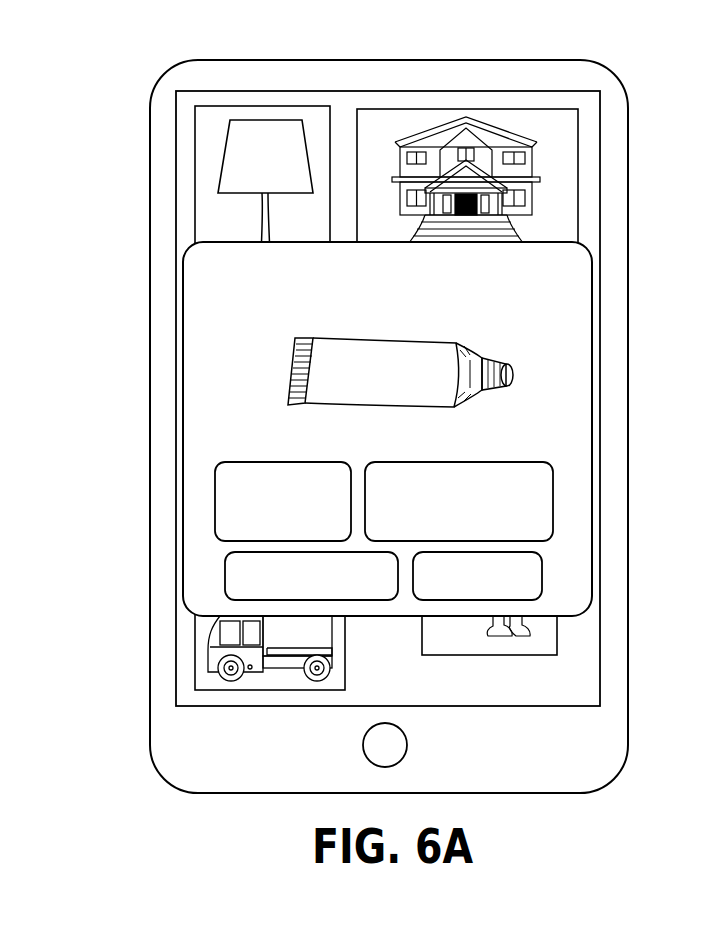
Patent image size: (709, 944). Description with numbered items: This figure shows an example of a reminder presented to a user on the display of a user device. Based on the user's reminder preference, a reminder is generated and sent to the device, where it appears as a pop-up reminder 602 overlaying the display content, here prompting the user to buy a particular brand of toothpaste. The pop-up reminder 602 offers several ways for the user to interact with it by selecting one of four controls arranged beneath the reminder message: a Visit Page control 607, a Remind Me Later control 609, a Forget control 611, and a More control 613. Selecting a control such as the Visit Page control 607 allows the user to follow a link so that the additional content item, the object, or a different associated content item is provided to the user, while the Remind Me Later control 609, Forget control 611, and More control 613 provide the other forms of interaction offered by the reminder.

The pop-up reminder 602 is at (379, 423).
The Visit Page control 607 is at (217, 498).
The Remind Me Later control 609 is at (553, 500).
The Forget control 611 is at (224, 574).
The More control 613 is at (542, 573).